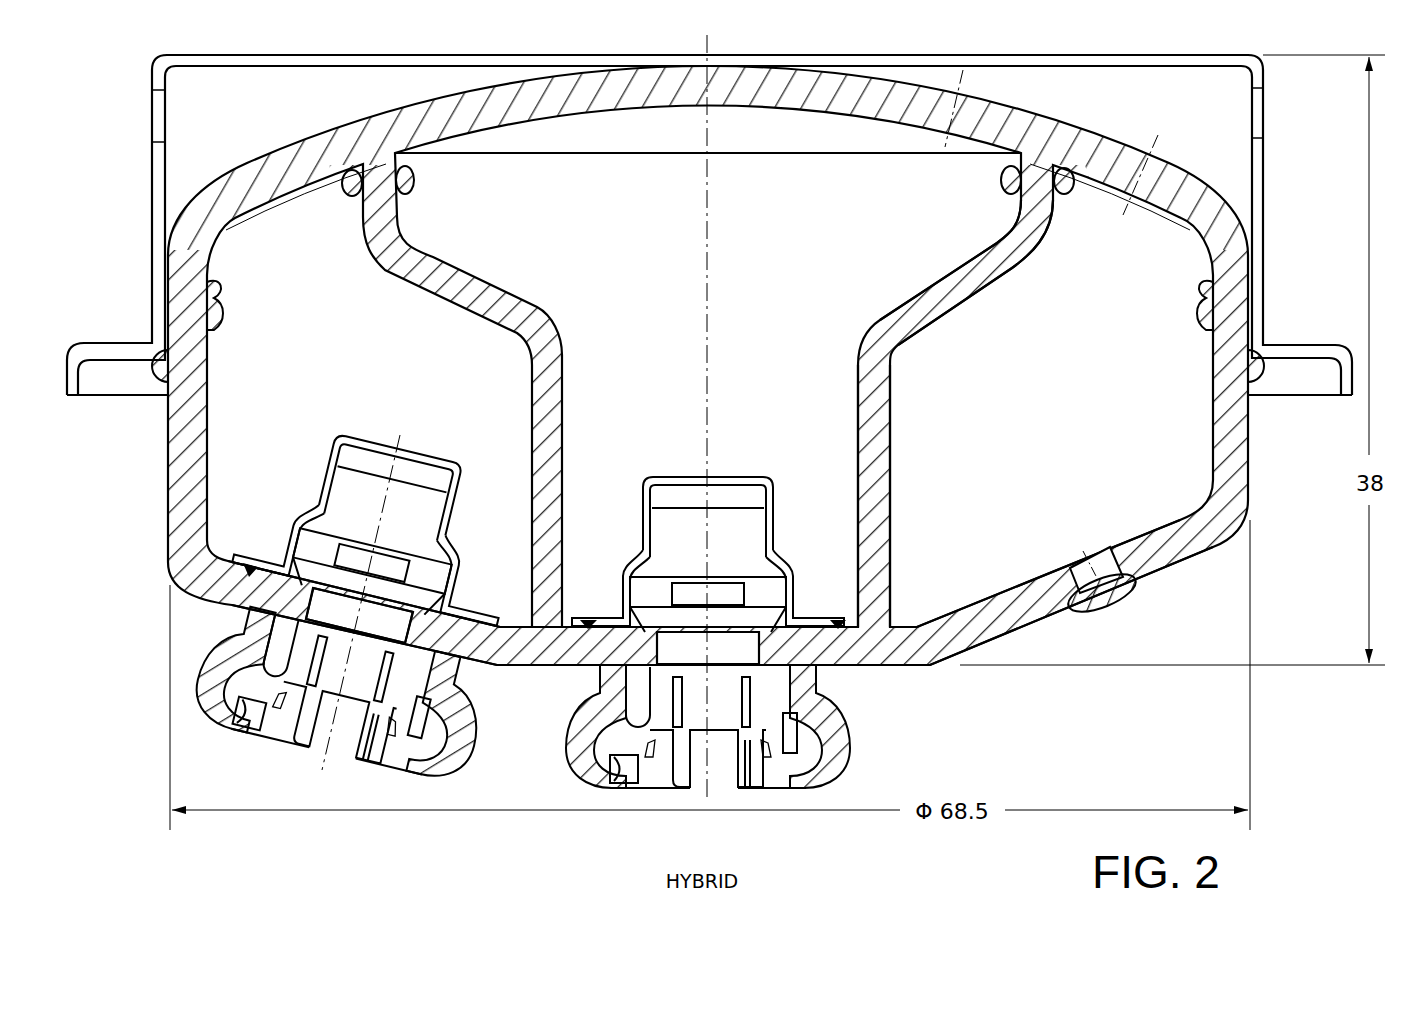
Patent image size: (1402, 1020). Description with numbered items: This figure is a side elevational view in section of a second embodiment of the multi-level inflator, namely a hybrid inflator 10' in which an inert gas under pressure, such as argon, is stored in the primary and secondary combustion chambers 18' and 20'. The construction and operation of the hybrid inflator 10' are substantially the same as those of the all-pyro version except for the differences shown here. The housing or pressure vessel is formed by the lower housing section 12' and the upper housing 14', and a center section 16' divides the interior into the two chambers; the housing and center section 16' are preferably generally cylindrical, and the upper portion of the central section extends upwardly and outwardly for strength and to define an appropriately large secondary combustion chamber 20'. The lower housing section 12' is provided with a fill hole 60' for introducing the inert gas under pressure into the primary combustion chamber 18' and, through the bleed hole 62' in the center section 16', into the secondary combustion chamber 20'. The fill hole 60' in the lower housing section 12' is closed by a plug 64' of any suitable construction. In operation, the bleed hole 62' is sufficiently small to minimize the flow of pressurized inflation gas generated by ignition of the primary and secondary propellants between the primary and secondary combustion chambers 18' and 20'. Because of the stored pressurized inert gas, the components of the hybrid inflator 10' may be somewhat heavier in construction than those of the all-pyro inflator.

The inflator 10' is at (709, 225).
The lower housing section 12' is at (720, 617).
The housing 14' is at (708, 365).
The center section 16' is at (921, 496).
The primary combustion chamber 18' is at (360, 385).
The secondary combustion chamber 20' is at (700, 390).
The fill hole 60' is at (1096, 521).
The bleed hole 62' is at (973, 279).
The plug 64' is at (1139, 609).